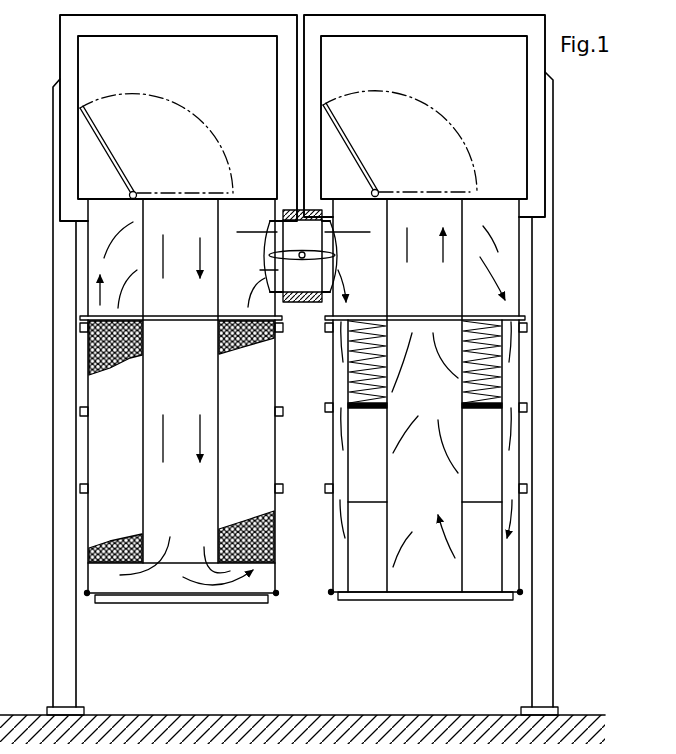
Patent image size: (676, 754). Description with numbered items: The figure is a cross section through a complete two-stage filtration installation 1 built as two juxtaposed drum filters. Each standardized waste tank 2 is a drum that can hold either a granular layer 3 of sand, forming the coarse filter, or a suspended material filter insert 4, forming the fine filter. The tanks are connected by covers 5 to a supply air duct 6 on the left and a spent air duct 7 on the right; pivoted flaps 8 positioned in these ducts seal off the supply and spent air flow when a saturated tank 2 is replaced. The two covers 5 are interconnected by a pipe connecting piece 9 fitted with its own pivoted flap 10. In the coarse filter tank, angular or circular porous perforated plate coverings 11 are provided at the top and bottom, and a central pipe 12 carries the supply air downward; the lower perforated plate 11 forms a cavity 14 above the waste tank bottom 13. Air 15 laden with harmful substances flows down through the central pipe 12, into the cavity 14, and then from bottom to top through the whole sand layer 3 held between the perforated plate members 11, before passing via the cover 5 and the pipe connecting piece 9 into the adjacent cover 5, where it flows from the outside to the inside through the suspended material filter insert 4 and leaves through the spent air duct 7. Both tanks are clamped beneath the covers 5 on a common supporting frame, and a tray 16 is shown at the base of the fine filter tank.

The two-stage filtration installation 1 is at (49, 334).
The waste tank 2 is at (80, 490).
The granular layer 3 is at (113, 368).
The suspended material filter insert 4 is at (493, 472).
The cover 5 is at (88, 245).
The supply air duct 6 is at (85, 60).
The spent air duct 7 is at (516, 134).
The pivoted flap 8 is at (79, 112).
The pipe connecting piece 9 is at (328, 297).
The pivoted flap 10 is at (287, 258).
The perforated plate covering 11 is at (98, 318).
The central pipe 12 is at (143, 480).
The waste tank bottom 13 is at (110, 604).
The cavity 14 is at (253, 591).
The air 15 is at (206, 437).
The bottom tray of heat exchanger 16 is at (513, 567).